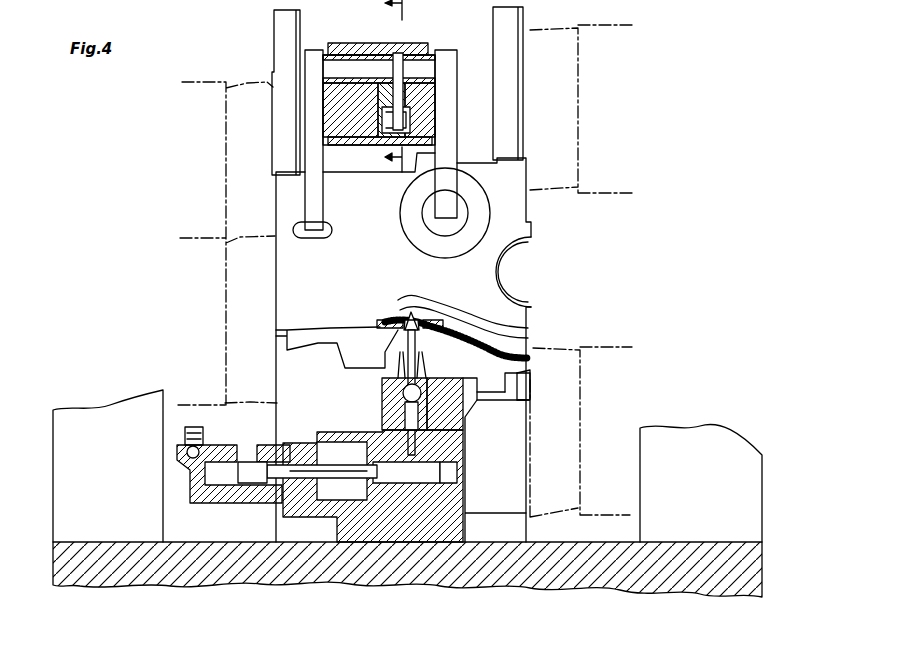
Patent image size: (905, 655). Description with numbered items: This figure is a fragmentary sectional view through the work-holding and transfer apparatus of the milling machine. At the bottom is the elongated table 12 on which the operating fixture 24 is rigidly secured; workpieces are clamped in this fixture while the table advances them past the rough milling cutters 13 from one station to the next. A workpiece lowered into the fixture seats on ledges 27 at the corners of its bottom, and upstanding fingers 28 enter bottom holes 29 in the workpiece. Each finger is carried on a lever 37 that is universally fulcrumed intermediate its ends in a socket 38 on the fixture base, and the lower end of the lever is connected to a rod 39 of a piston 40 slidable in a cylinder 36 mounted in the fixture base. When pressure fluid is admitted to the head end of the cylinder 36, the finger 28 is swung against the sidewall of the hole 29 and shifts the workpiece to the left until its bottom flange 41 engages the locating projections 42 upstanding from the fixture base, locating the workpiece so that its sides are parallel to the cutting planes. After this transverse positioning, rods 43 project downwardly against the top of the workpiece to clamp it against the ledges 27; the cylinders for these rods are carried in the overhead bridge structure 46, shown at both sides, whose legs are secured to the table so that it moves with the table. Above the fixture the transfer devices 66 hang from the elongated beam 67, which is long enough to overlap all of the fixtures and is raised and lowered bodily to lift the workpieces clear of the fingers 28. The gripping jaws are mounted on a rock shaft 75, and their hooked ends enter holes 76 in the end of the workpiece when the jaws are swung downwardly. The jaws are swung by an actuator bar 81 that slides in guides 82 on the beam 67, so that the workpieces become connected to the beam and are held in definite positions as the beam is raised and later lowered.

The table 12 is at (277, 577).
The cutters 13 is at (565, 350).
The operating fixture 24 is at (517, 522).
The ledges 27 is at (296, 326).
The upstanding fingers 28 is at (404, 345).
The bottom holes 29 is at (425, 310).
The cylinders 36 is at (226, 495).
The levers 37 is at (405, 418).
The sockets 38 is at (385, 400).
The rods 39 is at (290, 465).
The pistons 40 is at (250, 462).
The bottom flange 41 is at (531, 382).
The locating projections 42 is at (512, 372).
The rods 43 is at (290, 157).
The bridge structure 46 is at (105, 400).
The transfer devices 66 is at (306, 197).
The beam 67 is at (356, 46).
The rock shaft 75 is at (420, 62).
The holes 76 is at (330, 238).
The actuator bar 81 is at (396, 58).
The guides 82 is at (384, 124).